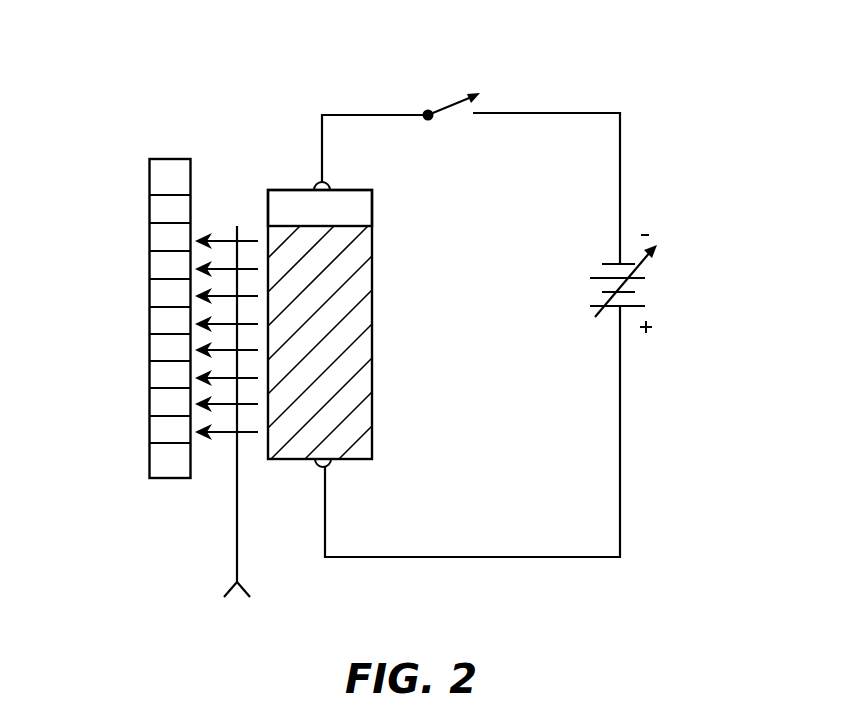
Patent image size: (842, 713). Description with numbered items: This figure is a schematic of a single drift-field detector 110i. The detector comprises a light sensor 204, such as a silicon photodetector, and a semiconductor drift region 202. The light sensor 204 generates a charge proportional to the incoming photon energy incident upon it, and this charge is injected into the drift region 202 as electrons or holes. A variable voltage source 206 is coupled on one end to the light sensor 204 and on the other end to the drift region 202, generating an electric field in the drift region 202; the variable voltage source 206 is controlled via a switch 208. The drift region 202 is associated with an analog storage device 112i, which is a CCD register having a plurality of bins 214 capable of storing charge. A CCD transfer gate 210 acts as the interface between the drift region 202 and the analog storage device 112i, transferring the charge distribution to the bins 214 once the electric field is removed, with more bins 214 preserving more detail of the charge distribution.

The drift-field detector 110i is at (648, 638).
The analog storage device 112i is at (128, 313).
The semiconductor drift region 202 is at (360, 460).
The light sensor 204 is at (360, 190).
The variable voltage source 206 is at (632, 307).
The switch 208 is at (497, 66).
The CCD transfer gate 210 is at (238, 560).
The bins 214 is at (163, 175).